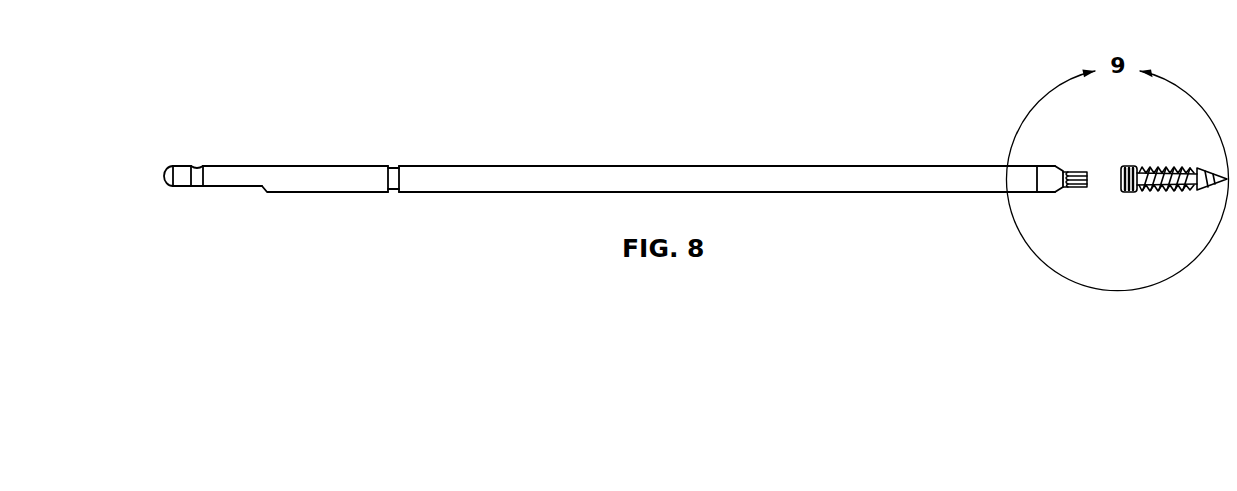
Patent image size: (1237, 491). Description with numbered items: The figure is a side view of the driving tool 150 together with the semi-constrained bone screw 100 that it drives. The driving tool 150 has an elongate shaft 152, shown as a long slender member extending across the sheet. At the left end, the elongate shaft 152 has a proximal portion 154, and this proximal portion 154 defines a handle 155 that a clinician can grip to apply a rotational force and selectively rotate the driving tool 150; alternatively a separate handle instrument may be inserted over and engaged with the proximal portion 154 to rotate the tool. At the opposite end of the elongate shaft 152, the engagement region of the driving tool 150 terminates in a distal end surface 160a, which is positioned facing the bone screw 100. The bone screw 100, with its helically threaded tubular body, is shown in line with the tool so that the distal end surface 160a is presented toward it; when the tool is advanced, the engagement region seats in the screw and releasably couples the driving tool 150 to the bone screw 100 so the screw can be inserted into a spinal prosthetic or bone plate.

The driving tool 150 is at (535, 146).
The elongate shaft 152 is at (807, 179).
The proximal portion 154 is at (236, 177).
The handle 155 is at (331, 174).
The distal end surface 160a is at (1086, 178).
The bone screw 100 is at (1173, 160).